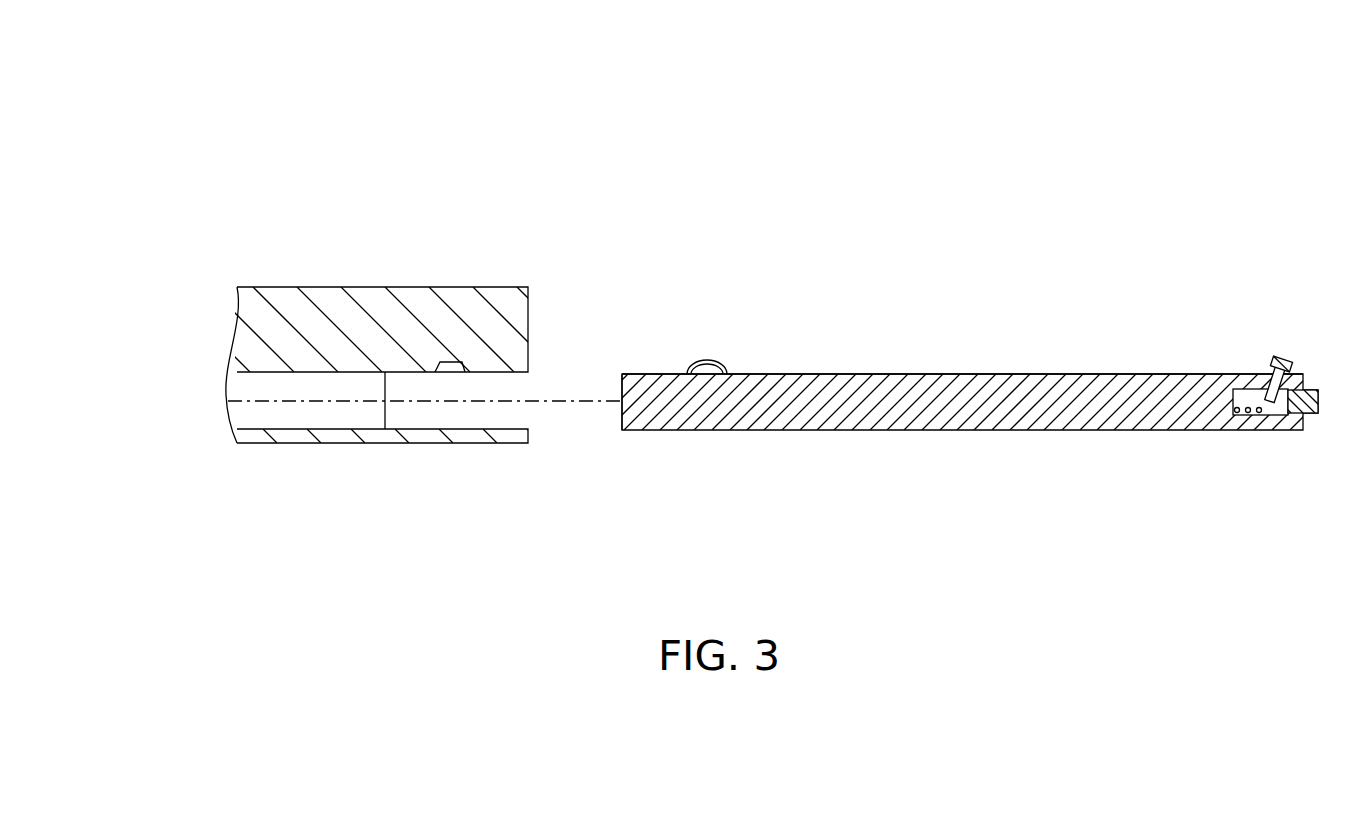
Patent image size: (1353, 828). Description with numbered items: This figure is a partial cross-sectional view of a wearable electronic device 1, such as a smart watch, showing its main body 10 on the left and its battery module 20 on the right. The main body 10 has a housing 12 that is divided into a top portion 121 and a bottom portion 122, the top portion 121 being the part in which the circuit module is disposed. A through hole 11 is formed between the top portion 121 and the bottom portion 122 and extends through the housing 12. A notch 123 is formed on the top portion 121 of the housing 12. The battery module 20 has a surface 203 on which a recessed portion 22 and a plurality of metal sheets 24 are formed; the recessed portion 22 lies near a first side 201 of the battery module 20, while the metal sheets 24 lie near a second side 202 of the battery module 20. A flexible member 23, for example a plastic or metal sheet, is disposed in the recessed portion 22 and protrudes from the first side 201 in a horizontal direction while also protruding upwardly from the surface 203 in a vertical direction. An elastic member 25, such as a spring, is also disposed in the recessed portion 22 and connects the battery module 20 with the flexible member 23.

The wearable electronic device 1 is at (140, 88).
The main body 10 is at (372, 270).
The through hole 11 is at (500, 414).
The housing 12 is at (141, 318).
The top portion 121 is at (262, 333).
The bottom portion 122 is at (248, 437).
The notch 123 is at (450, 366).
The battery module 20 is at (928, 360).
The first side 201 is at (1302, 428).
The second side 202 is at (622, 388).
The surface 203 is at (815, 374).
The recessed portion 22 is at (1241, 393).
The flexible member 23 is at (1280, 362).
The metal sheets 24 is at (706, 360).
The elastic member 25 is at (1250, 416).